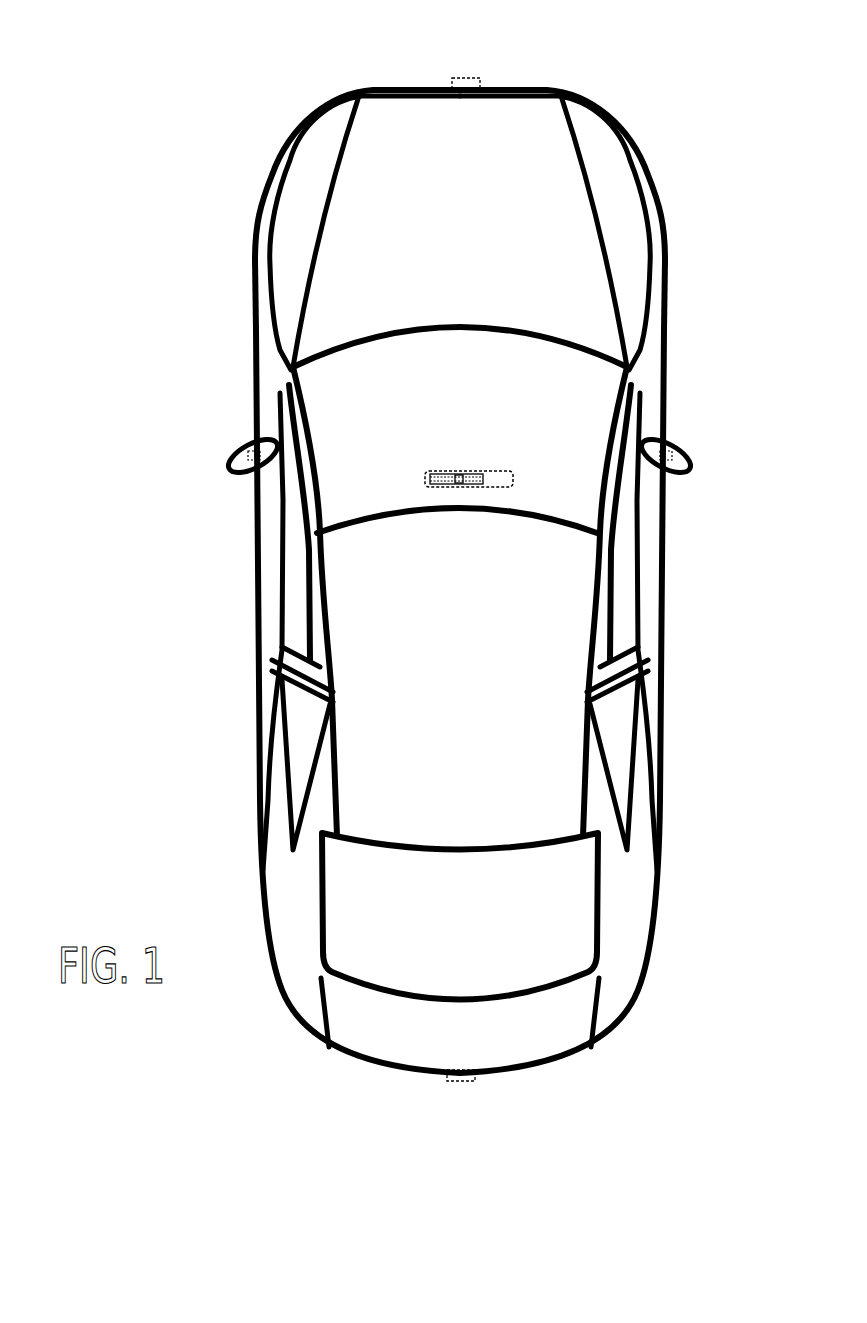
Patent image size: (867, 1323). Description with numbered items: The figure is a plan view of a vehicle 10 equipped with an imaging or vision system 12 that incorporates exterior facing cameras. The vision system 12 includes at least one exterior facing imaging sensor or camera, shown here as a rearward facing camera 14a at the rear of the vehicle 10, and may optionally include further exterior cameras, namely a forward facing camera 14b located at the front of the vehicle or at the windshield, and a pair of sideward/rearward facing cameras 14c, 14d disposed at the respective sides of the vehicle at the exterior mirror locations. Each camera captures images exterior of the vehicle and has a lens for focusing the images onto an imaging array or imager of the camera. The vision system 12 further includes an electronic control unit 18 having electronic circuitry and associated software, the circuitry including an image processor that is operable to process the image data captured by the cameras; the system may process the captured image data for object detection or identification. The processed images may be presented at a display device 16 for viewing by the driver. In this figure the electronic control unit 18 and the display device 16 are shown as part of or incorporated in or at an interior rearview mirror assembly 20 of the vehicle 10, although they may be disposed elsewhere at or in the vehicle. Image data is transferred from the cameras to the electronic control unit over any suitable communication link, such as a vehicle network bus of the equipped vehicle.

The vehicle 10 is at (210, 182).
The vision system 12 is at (412, 1102).
The rearward facing camera 14a is at (467, 1079).
The forward facing camera 14b is at (468, 78).
The sideward/rearward facing camera 14c is at (255, 456).
The sideward/rearward facing camera 14d is at (666, 455).
The display device 16 is at (442, 473).
The electronic control unit 18 is at (467, 473).
The interior rearview mirror assembly 20 is at (512, 471).